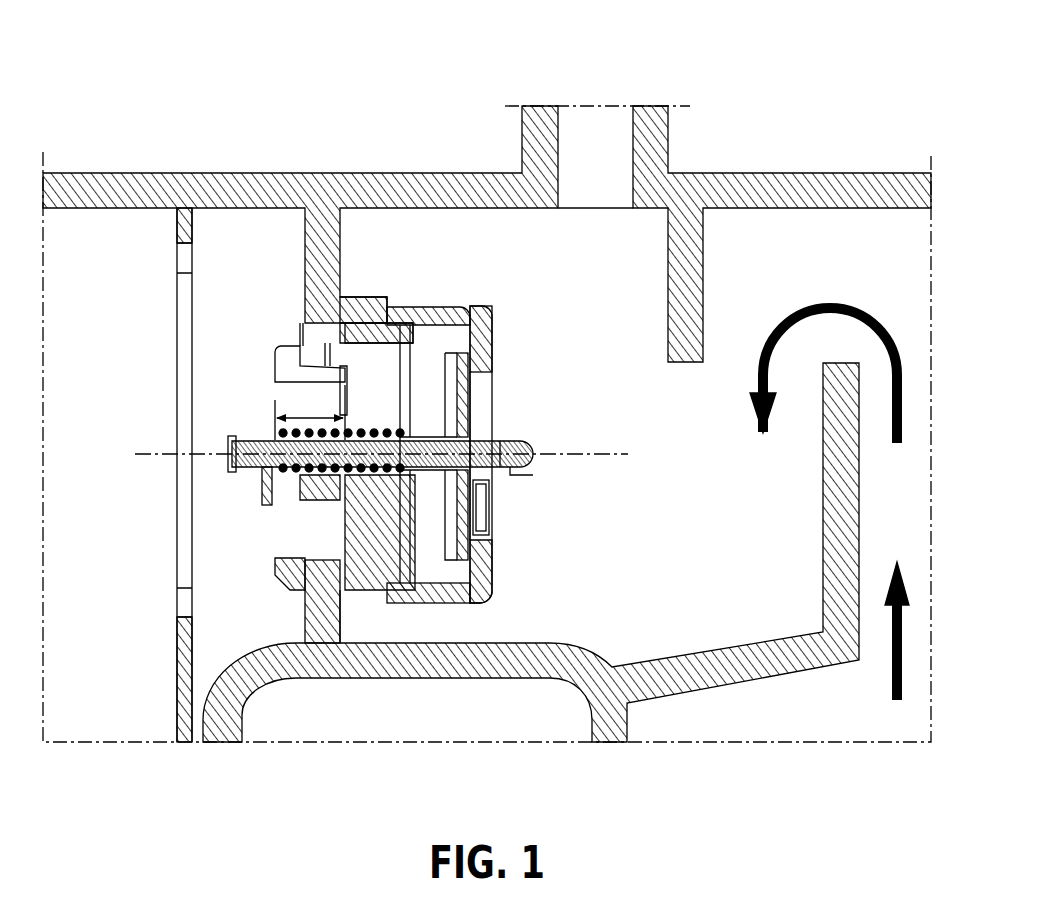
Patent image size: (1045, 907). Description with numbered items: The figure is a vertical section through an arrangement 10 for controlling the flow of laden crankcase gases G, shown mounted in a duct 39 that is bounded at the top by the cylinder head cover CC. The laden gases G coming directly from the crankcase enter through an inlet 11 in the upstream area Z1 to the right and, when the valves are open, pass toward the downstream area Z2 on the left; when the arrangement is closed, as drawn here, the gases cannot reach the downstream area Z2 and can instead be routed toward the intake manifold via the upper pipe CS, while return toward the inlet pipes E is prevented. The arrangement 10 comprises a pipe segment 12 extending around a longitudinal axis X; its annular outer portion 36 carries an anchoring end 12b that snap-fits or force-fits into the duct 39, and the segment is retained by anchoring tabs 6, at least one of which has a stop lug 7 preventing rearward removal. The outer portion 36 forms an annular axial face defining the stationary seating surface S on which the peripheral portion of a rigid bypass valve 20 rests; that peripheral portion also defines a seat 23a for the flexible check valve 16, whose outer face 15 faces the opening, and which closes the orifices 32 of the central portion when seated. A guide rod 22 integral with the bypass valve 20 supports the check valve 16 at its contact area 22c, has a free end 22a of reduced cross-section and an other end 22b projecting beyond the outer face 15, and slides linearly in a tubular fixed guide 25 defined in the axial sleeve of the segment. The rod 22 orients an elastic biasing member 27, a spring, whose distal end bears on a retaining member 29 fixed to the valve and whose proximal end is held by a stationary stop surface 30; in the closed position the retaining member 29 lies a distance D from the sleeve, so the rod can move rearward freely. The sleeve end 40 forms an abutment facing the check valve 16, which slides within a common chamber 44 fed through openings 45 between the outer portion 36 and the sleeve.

The arrangement 10 is at (237, 602).
The inlet 11 is at (885, 237).
The pipe segment 12 is at (425, 326).
The anchoring end 12b is at (280, 356).
The outer face 15 is at (497, 565).
The check valve 16 is at (443, 345).
The bypass valve 20 is at (500, 590).
The guide rod 22 is at (430, 470).
The free end 22a is at (237, 466).
The other end 22b is at (512, 443).
The contact area 22c is at (512, 470).
The seat 23a is at (493, 372).
The fixed guide 25 is at (410, 480).
The elastic biasing member 27 is at (302, 478).
The retaining member 29 is at (258, 492).
The stop surface 30 is at (432, 428).
The orifices 32 is at (485, 510).
The annular outer portion 36 is at (400, 562).
The duct 39 is at (363, 303).
The end of the axial sleeve 40 is at (418, 440).
The common chamber 44 is at (452, 575).
The openings 45 is at (405, 312).
The anchoring tabs 6 is at (302, 346).
The stop lug 7 is at (295, 592).
The cylinder head cover CC is at (258, 176).
The upper pipe CS is at (558, 165).
The distance D is at (268, 416).
The inlet pipes E is at (861, 648).
The laden gases G is at (903, 690).
The stationary seating surface S is at (468, 308).
The longitudinal axis X is at (157, 446).
The upstream area Z1 is at (728, 320).
The downstream area Z2 is at (167, 333).